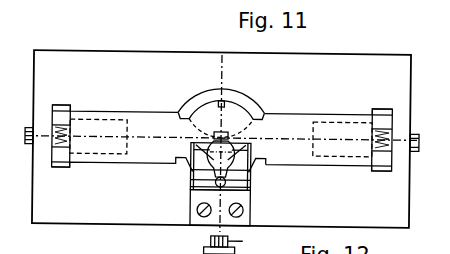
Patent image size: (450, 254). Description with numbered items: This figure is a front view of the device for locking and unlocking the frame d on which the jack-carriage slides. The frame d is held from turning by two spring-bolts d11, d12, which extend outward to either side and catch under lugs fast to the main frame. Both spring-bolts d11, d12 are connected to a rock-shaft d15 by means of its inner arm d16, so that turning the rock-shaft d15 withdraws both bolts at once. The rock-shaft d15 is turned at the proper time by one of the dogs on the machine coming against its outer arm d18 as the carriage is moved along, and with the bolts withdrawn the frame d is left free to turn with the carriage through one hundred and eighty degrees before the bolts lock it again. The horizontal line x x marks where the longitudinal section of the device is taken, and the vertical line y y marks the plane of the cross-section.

The frame d is at (221, 139).
The spring-bolt d11 is at (339, 163).
The spring-bolt d12 is at (104, 115).
The rock-shaft d15 is at (195, 146).
The inner arm d16 is at (277, 183).
The outer arm d18 is at (193, 172).
The section line x x is at (214, 139).
The section line y y is at (238, 41).